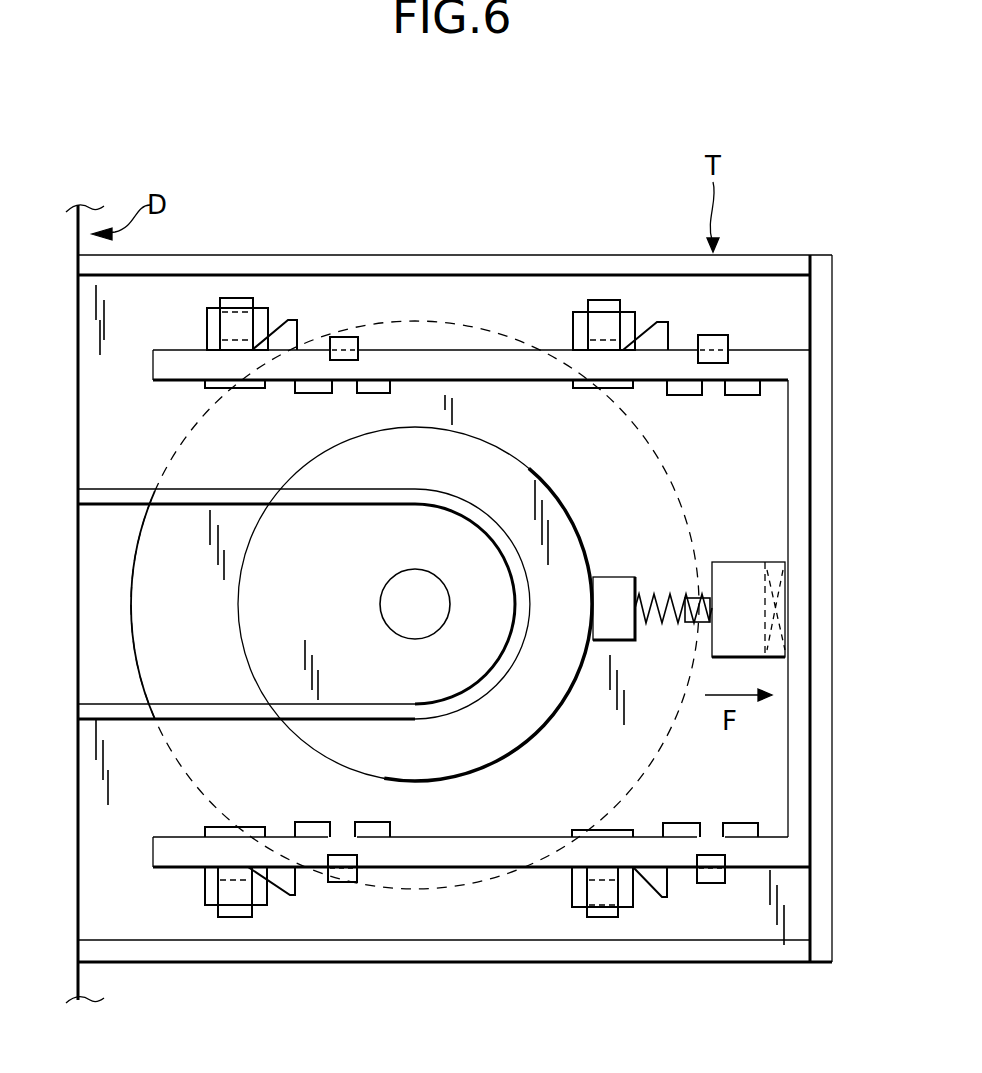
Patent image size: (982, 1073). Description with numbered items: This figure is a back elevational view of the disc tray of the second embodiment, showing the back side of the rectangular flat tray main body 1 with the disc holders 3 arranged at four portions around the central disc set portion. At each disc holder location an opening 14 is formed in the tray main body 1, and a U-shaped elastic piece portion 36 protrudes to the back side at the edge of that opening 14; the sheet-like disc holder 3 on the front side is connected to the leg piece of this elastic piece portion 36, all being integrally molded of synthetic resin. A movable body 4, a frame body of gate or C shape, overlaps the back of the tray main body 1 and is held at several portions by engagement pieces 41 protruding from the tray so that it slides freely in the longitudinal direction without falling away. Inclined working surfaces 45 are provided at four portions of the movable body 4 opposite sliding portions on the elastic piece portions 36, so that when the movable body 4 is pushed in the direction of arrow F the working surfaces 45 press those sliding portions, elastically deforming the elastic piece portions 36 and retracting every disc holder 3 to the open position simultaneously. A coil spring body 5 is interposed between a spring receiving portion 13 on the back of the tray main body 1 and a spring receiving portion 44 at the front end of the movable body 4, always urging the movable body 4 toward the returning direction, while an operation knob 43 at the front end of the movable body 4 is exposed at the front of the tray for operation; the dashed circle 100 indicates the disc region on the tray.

The tray main body 1 is at (523, 254).
The disc holder 3 is at (208, 372).
The movable body 4 is at (440, 365).
The spring body 5 is at (663, 592).
The spring receiving portion 13 is at (613, 577).
The opening 14 is at (207, 322).
The elastic piece portion 36 is at (253, 303).
The engagement piece 41 is at (382, 383).
The operation knob 43 is at (785, 592).
The spring receiving portion 44 is at (745, 562).
The inclined working surface 45 is at (255, 332).
The turntable 100 is at (685, 472).